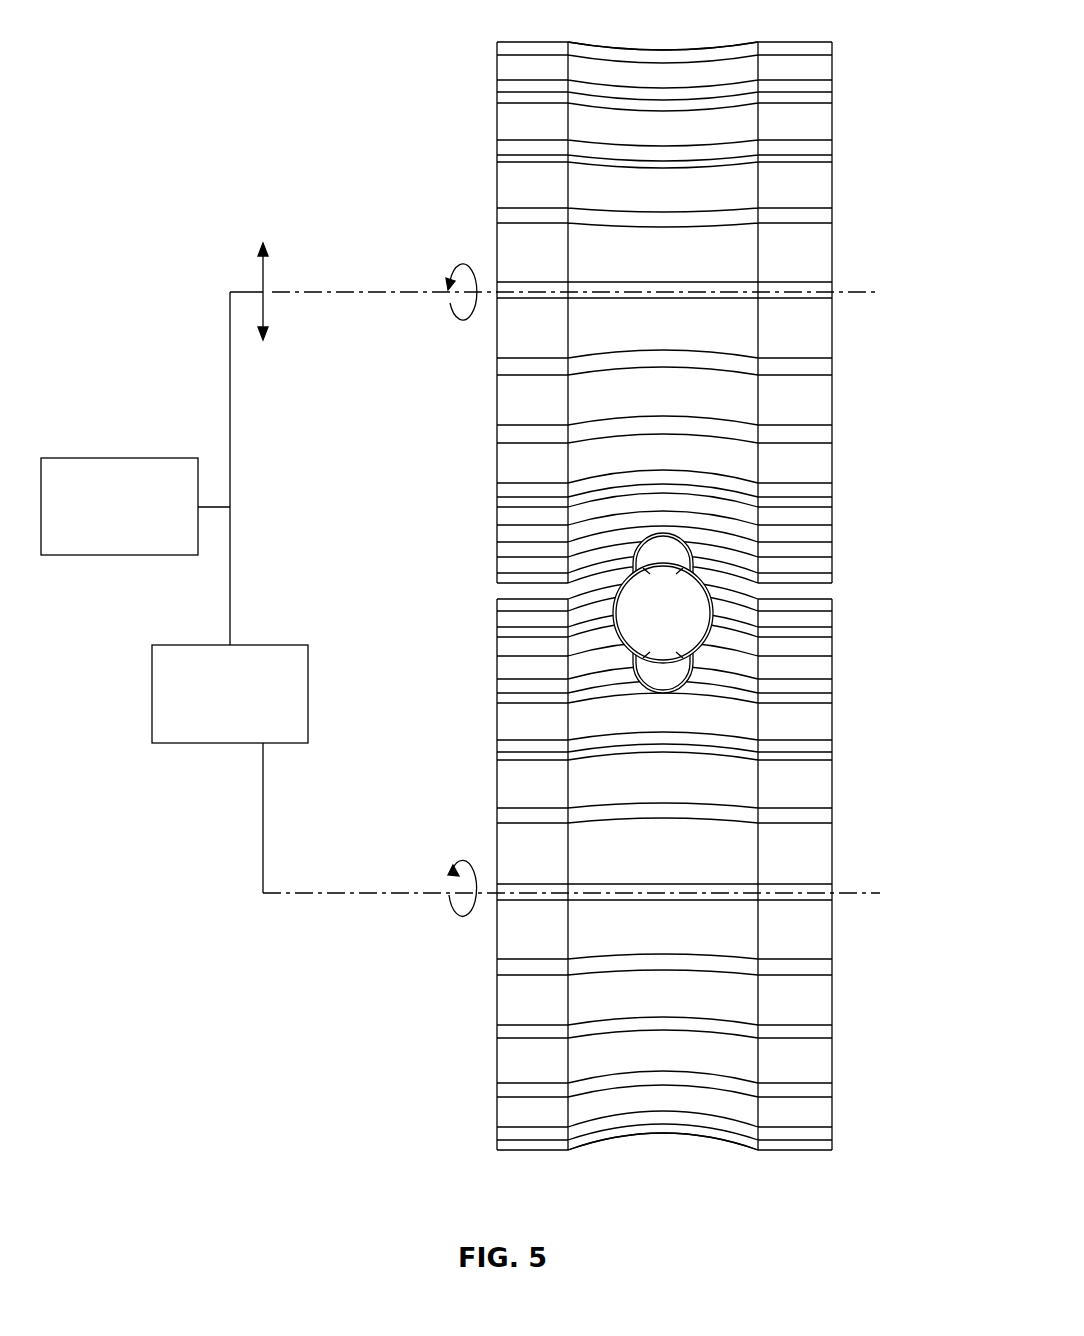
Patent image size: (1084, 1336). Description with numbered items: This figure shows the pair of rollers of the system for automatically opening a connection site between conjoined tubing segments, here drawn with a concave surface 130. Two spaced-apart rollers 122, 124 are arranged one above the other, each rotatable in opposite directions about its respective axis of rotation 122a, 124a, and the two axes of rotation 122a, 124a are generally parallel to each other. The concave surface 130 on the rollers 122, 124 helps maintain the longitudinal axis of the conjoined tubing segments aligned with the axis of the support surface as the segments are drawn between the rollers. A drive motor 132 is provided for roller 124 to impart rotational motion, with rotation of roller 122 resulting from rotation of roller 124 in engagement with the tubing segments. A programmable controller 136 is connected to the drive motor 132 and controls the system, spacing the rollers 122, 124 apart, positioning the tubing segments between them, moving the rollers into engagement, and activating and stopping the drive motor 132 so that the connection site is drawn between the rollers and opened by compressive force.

The roller 122 is at (832, 177).
The axis of rotation 122a is at (872, 292).
The roller 124 is at (832, 1007).
The axis of rotation 124a is at (872, 893).
The concave surface 130 is at (663, 42).
The drive motor 132 is at (222, 645).
The programmable controller 136 is at (108, 458).